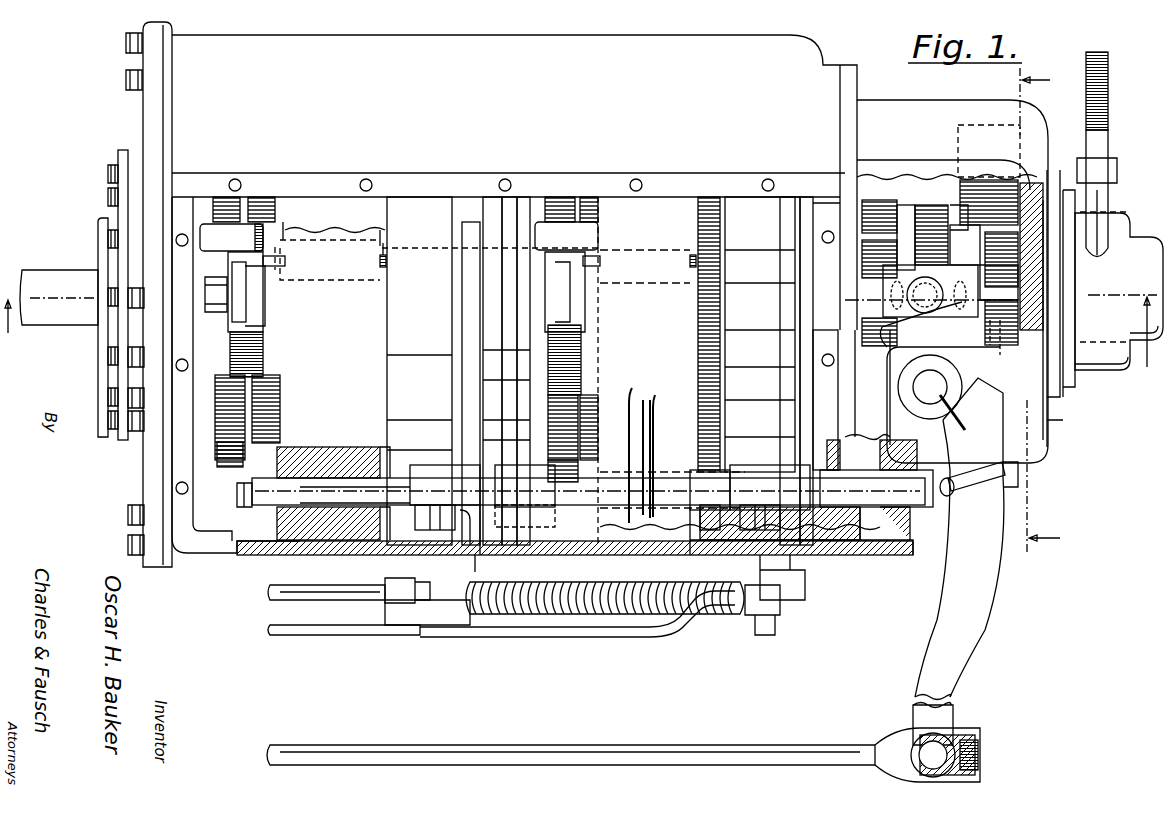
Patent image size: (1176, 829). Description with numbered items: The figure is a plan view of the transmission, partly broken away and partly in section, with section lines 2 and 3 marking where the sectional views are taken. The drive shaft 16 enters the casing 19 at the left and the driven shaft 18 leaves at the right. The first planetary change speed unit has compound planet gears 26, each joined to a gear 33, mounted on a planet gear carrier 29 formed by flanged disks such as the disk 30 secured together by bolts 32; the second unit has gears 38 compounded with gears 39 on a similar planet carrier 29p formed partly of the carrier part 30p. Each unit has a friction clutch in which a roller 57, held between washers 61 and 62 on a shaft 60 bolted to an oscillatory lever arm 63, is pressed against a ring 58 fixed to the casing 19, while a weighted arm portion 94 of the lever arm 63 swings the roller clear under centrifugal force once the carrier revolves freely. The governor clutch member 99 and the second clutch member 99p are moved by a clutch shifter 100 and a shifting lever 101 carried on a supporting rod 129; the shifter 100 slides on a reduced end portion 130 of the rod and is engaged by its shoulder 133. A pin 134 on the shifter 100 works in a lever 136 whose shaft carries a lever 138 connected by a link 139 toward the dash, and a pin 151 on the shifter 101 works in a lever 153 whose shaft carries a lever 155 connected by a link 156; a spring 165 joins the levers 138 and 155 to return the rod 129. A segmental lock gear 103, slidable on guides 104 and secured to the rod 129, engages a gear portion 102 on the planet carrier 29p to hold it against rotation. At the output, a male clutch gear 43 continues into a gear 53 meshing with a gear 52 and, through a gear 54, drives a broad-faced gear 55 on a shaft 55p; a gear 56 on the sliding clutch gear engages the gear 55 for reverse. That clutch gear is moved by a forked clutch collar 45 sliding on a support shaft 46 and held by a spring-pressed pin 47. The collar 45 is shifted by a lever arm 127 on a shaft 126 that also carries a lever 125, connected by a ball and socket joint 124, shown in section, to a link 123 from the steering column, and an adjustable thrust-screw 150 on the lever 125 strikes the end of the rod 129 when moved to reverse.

The casing 19 is at (390, 55).
The bolts 32 is at (190, 298).
The drive shaft 16 is at (73, 284).
The section line 2- 2 is at (579, 340).
The section line 3- 3 is at (1046, 311).
The reduced end portion 130 is at (327, 500).
The gears 26 is at (221, 198).
The gear 33 is at (257, 198).
The flanged disk 30 is at (231, 237).
The planet gear carrier 29 is at (212, 423).
The oscillatory lever arm 63 is at (257, 294).
The weighted arm portion 94 is at (258, 362).
The washer 62 is at (612, 238).
The roller 57 is at (277, 276).
The ring 58 is at (345, 234).
The shaft 60 is at (386, 263).
The washer 61 is at (388, 250).
The clutch shifter 100 is at (478, 396).
The clutch member 99 is at (460, 309).
The gears 38 is at (554, 196).
The gears 39 is at (587, 196).
The carrier part 30p is at (566, 236).
The planet carrier 29p is at (548, 469).
The gear portion 102 is at (715, 316).
The shifting lever 101 is at (800, 390).
The clutch member 99p is at (800, 313).
The segmental lock gear 103 is at (715, 485).
The shoulder 133 is at (477, 482).
The supporting rod 129 is at (580, 497).
The pin 134 is at (427, 525).
The lever 136 is at (487, 540).
The guides 104 is at (712, 528).
The lever 153 is at (760, 550).
The pin 151 is at (813, 558).
The lever 155 is at (780, 588).
The link 139 is at (337, 594).
The link 156 is at (363, 630).
The spring 165 is at (600, 582).
The lever 138 is at (448, 639).
The gear 52 is at (862, 215).
The gear 53 is at (862, 252).
The male clutch gear 43 is at (900, 240).
The gear 56 is at (916, 205).
The shaft 55p is at (920, 187).
The broad-faced gear 55 is at (991, 190).
The spring-pressed pin 47 is at (930, 291).
The forked clutch collar 45 is at (984, 285).
The support shaft 46 is at (1030, 290).
The gear 54 is at (995, 356).
The driven shaft 18 is at (1149, 258).
The shaft 126 is at (923, 403).
The lever arm 127 is at (914, 336).
The lever 125 is at (943, 668).
The adjustable thrust-screw 150 is at (942, 500).
The link 123 is at (450, 733).
The ball and socket joint 124 is at (910, 778).